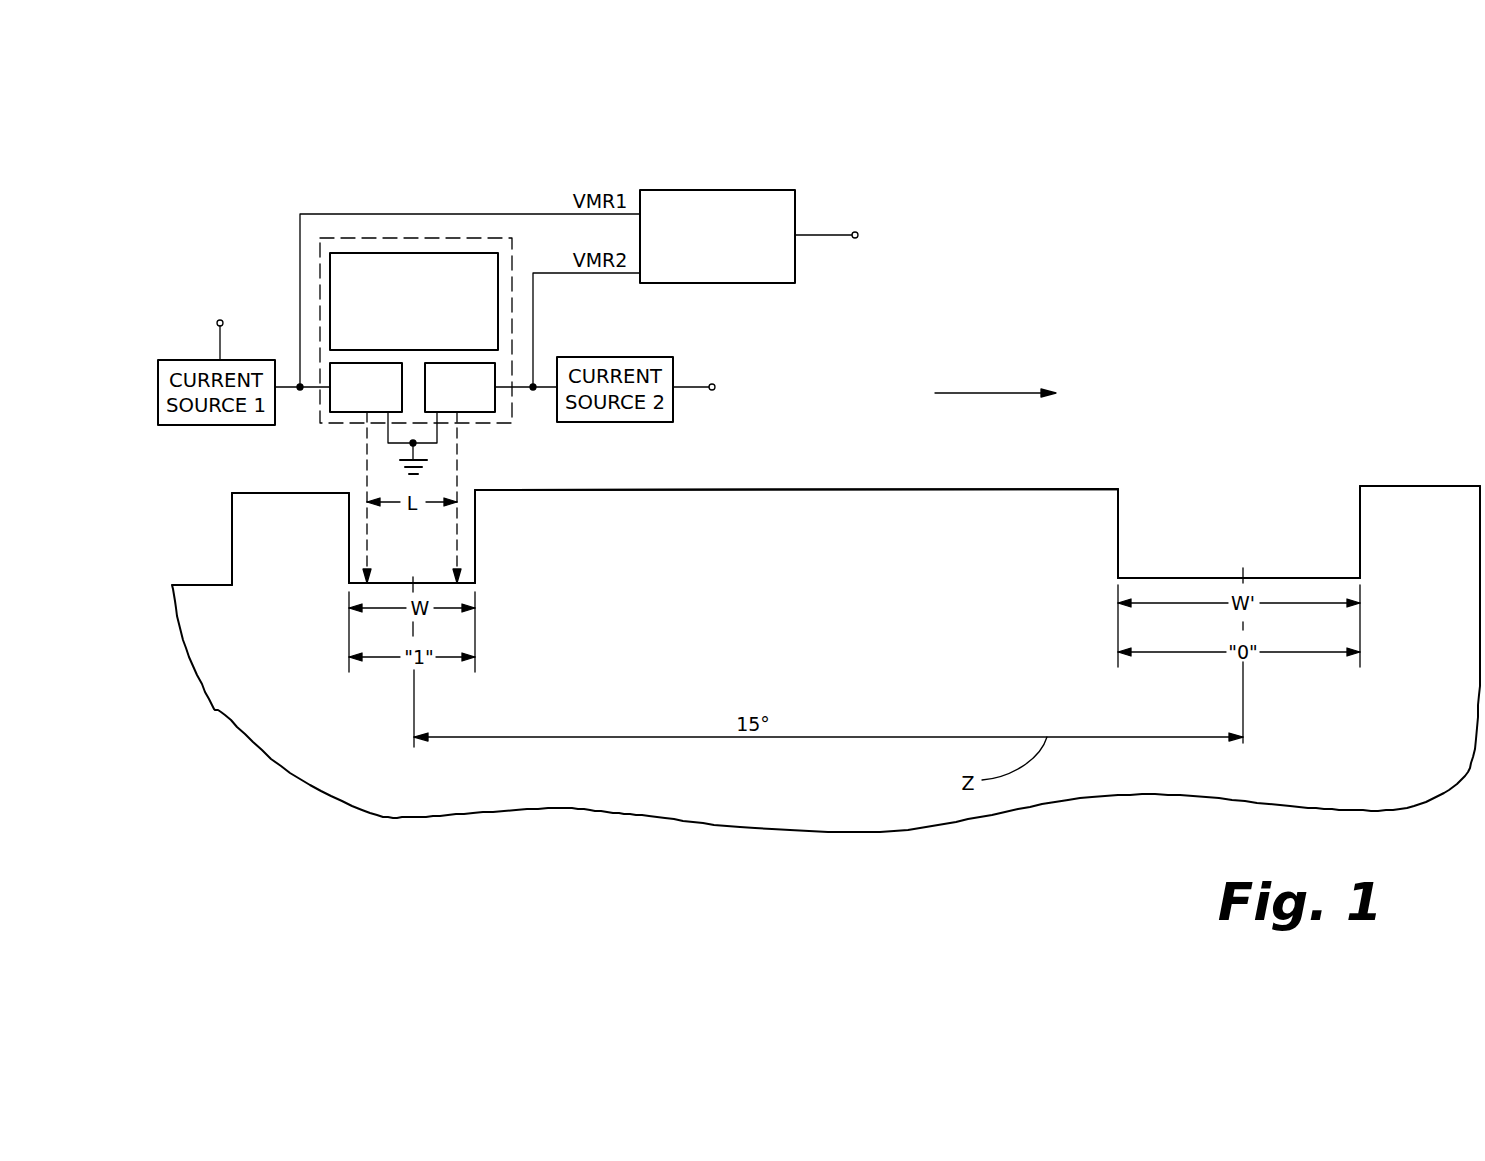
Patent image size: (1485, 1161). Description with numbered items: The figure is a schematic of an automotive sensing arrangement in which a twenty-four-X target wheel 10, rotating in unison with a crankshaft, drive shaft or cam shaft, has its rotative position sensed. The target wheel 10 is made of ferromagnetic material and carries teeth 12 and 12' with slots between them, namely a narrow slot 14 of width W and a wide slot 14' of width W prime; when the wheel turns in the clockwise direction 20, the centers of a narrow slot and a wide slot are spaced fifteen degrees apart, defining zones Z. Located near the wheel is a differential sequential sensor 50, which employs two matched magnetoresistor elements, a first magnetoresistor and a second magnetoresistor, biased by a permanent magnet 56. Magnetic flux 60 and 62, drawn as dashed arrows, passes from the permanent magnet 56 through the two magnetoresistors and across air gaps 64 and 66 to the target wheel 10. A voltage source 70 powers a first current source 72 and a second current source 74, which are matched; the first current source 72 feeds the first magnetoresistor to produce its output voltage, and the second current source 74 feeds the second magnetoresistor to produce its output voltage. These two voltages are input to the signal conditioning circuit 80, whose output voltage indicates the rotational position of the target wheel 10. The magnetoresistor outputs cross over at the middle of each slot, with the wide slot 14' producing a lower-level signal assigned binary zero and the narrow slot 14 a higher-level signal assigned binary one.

The target wheel 10 is at (703, 822).
The tooth 12 is at (836, 539).
The tooth 12' is at (796, 496).
The narrow slot 14 is at (412, 549).
The wide slot 14' is at (1239, 518).
The clockwise direction 20 is at (985, 393).
The differential sequential sensor 50 is at (493, 238).
The permanent magnet 56 is at (357, 253).
The magnetic flux 60 is at (365, 358).
The magnetic flux 62 is at (455, 357).
The air gap 64 is at (367, 453).
The air gap 66 is at (457, 446).
The voltage source 70 is at (217, 337).
The CURRENT SOURCE1 72 is at (158, 424).
The CURRENT SOURCE2 74 is at (648, 422).
The SIGNAL CONDITIONING CIRCUIT 80 is at (768, 190).